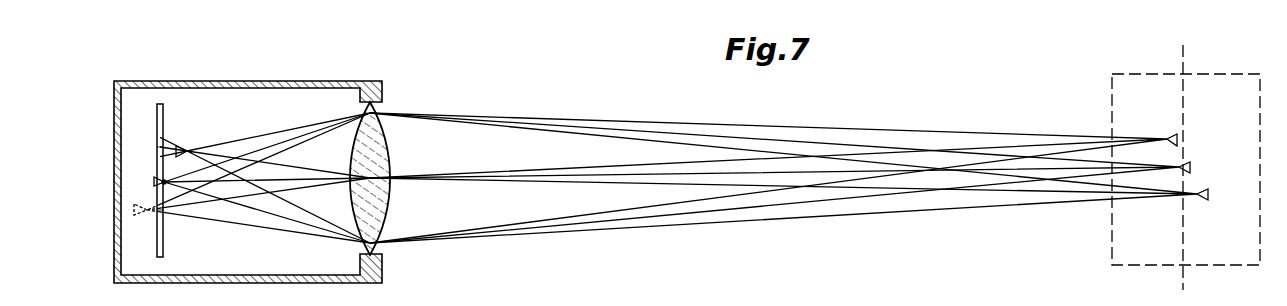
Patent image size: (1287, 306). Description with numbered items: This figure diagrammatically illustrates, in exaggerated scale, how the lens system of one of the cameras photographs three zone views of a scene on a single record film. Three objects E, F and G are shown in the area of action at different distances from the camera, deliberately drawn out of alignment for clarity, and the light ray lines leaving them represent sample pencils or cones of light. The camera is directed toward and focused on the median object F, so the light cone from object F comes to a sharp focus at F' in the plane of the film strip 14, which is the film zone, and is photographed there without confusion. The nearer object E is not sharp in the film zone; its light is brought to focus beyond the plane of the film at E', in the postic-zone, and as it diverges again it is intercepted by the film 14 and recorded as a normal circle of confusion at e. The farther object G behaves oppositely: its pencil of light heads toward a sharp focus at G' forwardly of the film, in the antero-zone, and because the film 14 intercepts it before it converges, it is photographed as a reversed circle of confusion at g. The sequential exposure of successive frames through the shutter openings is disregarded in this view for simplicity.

The film strip 14 is at (165, 112).
The object E is at (790, 174).
The median object F is at (796, 178).
The object G is at (804, 178).
The focus of object E E' is at (249, 184).
The focus of object F F' is at (249, 178).
The focus of object G G' is at (265, 178).
The normal circle of confusion e is at (166, 212).
The reversed circle of confusion g is at (156, 148).